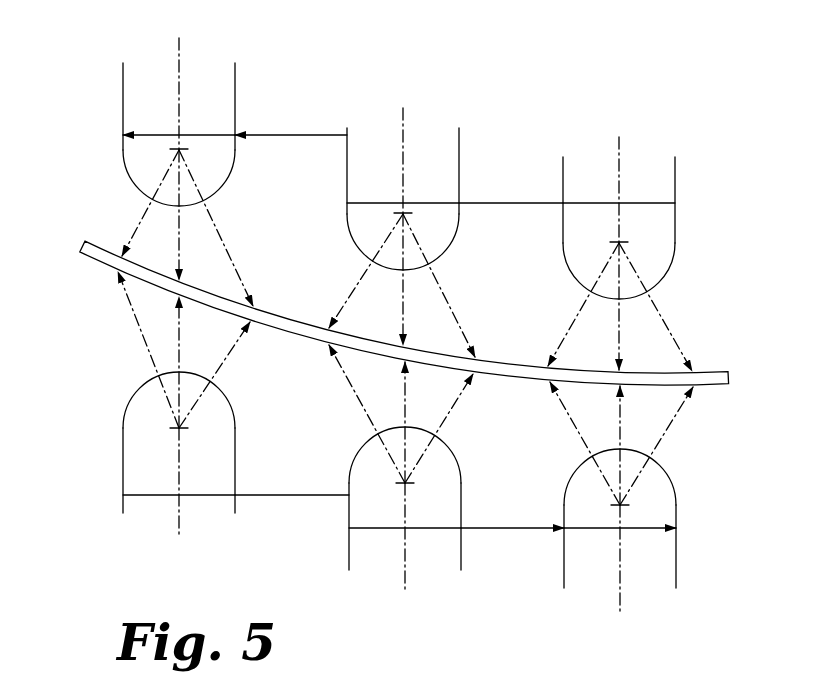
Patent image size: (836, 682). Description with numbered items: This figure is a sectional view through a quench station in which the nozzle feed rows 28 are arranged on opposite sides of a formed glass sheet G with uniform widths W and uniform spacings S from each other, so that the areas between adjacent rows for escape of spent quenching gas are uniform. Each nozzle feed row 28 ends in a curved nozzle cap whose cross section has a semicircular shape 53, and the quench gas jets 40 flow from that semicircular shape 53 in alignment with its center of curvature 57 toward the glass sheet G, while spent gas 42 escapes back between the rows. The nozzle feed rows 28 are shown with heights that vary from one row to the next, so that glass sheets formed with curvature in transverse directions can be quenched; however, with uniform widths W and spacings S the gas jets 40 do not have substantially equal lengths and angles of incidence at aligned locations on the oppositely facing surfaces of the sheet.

The nozzle feed row 28 is at (200, 65).
The semicircular shape 53 is at (220, 188).
The center of curvature 57 is at (180, 147).
The quench gas jets 40 is at (140, 215).
The reflected light beams 42 is at (250, 323).
The glass sheet G is at (90, 253).
The width W is at (162, 133).
The spacing S is at (292, 133).